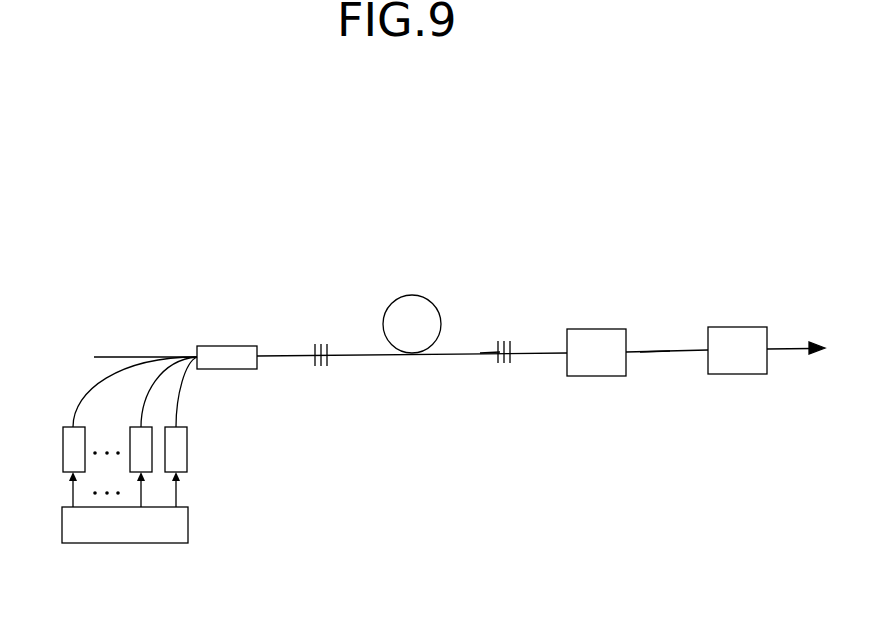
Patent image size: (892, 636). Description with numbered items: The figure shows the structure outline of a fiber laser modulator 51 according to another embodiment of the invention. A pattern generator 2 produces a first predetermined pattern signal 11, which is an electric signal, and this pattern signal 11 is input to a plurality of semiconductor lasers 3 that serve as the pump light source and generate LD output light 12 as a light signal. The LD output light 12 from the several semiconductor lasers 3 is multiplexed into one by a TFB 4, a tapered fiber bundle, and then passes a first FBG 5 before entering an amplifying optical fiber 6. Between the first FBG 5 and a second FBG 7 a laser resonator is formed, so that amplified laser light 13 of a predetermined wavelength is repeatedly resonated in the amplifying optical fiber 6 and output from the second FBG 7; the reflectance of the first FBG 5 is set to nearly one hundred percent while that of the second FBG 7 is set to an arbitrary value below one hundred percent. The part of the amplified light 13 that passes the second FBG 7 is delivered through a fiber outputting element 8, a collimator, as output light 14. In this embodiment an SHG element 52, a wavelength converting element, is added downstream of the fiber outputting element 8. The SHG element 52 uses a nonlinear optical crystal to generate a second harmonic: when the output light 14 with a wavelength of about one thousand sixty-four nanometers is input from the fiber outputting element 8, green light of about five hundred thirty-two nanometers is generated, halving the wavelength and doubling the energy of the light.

The pattern generator 2 is at (140, 538).
The semiconductor lasers 3 is at (187, 453).
The TFB (Tapered Fiber Bundle) 4 is at (229, 346).
The first FBG (Fiber Bragg Grating) 5 is at (312, 338).
The amplifying optical fiber 6 is at (403, 298).
The second FBG (Fiber Bragg Grating) 7 is at (497, 337).
The fiber outputting element (collimator) 8 is at (592, 328).
The first predetermined pattern signal 11 is at (178, 498).
The LD output light 12 is at (180, 397).
The amplified laser light 13 is at (477, 355).
The output light 14 is at (653, 352).
The fiber laser modulator 51 is at (440, 230).
The SHG element 52 is at (743, 327).